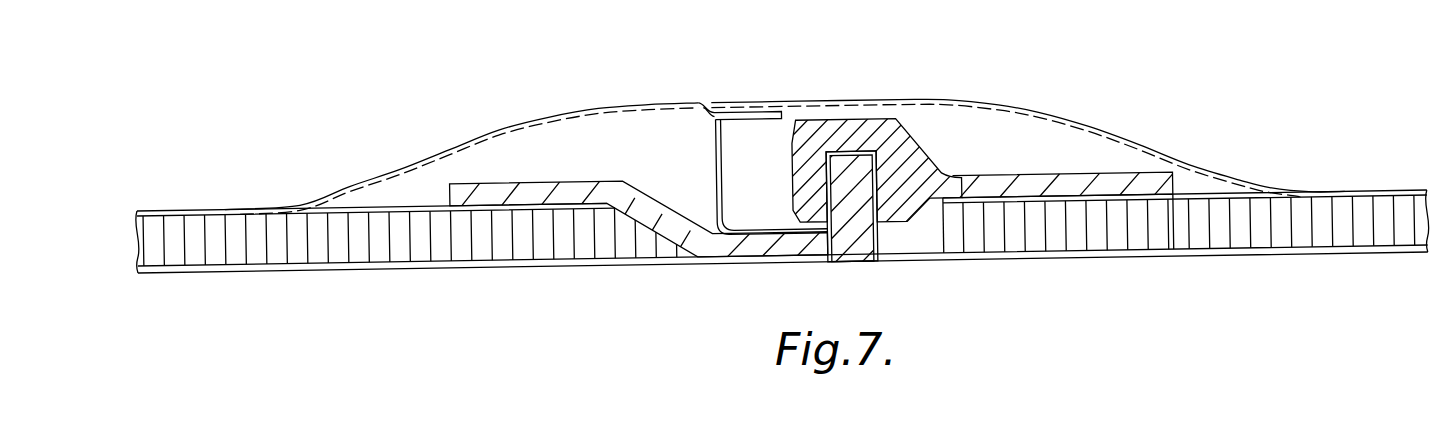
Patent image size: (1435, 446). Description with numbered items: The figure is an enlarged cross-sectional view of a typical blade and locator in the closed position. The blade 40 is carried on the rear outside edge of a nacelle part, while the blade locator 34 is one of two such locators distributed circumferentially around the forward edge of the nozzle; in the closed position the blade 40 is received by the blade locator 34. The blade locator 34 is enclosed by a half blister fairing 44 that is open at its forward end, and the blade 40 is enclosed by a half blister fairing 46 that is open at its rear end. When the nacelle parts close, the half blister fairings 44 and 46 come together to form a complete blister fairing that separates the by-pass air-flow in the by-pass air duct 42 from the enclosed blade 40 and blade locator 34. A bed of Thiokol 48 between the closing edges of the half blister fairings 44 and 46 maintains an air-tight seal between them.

The blade locator 34 is at (900, 173).
The blade 40 is at (850, 223).
The by-pass air duct 42 is at (206, 284).
The half blister fairing 44 is at (1107, 130).
The half blister fairing 46 is at (460, 143).
The bed of Thiokol 48 is at (744, 106).